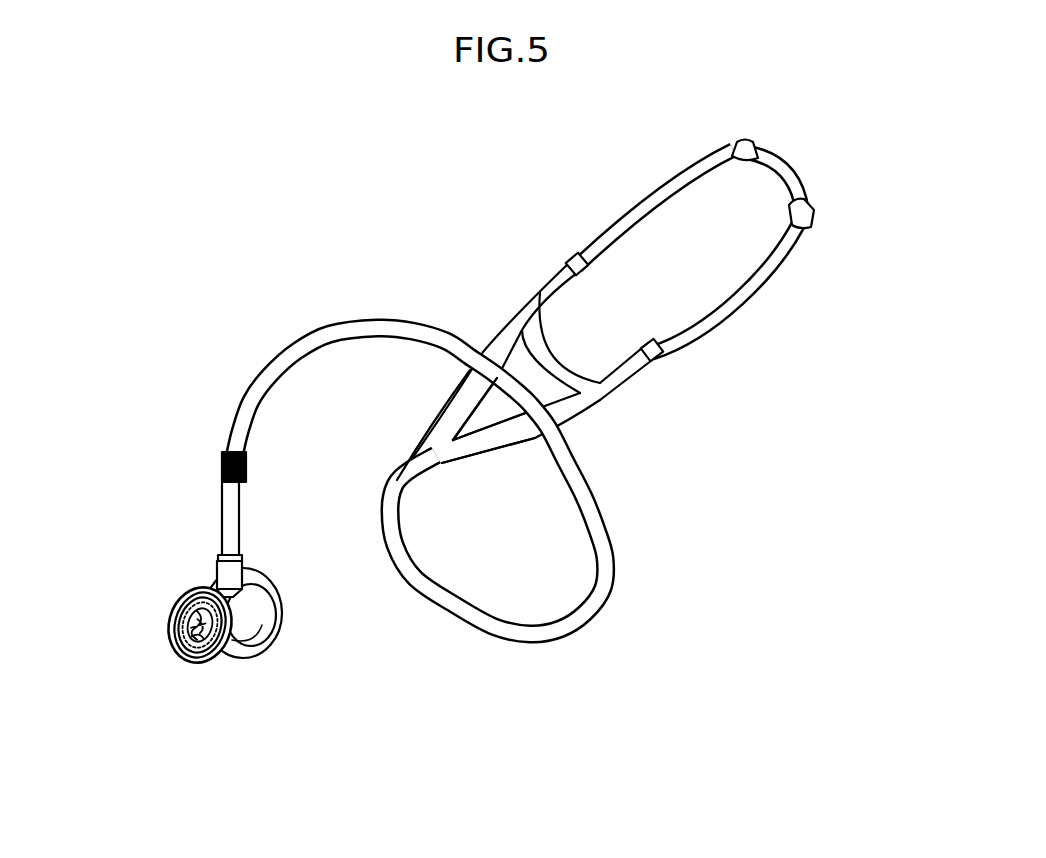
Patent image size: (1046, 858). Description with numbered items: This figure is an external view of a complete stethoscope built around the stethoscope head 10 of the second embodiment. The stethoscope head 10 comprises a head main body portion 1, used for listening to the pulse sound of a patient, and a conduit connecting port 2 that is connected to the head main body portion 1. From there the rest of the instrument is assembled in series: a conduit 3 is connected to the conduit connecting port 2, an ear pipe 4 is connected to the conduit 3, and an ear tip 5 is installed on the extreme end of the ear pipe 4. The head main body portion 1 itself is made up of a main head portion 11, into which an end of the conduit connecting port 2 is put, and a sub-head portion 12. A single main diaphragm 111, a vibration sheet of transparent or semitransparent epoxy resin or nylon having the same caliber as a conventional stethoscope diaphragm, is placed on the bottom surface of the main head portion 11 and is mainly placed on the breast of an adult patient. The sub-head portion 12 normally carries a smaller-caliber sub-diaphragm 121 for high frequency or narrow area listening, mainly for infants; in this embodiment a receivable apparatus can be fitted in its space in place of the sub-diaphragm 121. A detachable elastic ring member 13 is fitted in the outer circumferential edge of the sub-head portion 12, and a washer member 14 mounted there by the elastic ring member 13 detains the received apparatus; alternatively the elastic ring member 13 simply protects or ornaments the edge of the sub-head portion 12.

The head main body portion 1 is at (190, 586).
The conduit connecting port 2 is at (245, 563).
The conduit 3 is at (350, 327).
The ear pipe 4 is at (757, 273).
The ear tip 5 is at (746, 123).
The stethoscope head 10 is at (254, 644).
The main head portion 11 is at (230, 570).
The main diaphragm 111 is at (230, 633).
The sub-head portion 12 is at (217, 672).
The sub-diaphragm 121 is at (200, 660).
The elastic ring member 13 is at (207, 660).
The washer member 14 is at (222, 650).